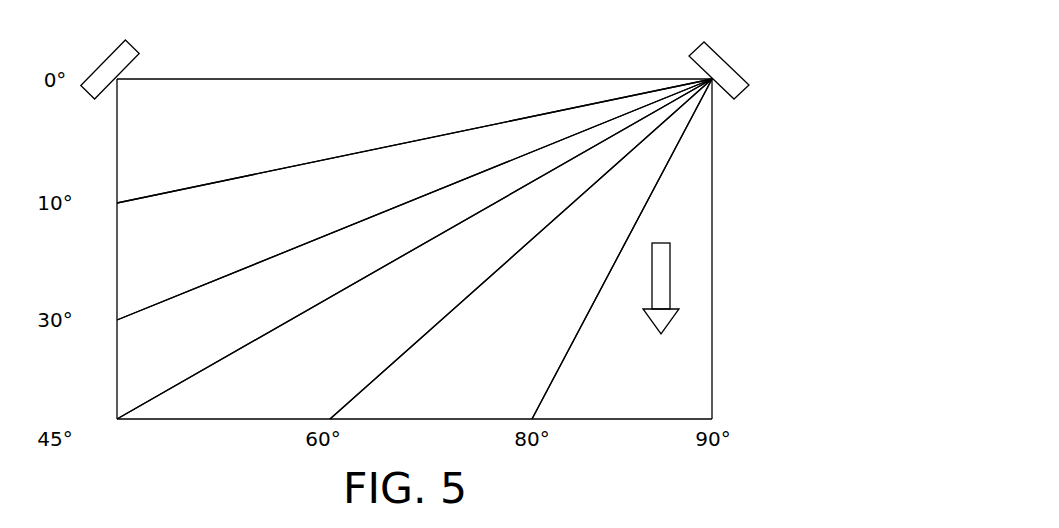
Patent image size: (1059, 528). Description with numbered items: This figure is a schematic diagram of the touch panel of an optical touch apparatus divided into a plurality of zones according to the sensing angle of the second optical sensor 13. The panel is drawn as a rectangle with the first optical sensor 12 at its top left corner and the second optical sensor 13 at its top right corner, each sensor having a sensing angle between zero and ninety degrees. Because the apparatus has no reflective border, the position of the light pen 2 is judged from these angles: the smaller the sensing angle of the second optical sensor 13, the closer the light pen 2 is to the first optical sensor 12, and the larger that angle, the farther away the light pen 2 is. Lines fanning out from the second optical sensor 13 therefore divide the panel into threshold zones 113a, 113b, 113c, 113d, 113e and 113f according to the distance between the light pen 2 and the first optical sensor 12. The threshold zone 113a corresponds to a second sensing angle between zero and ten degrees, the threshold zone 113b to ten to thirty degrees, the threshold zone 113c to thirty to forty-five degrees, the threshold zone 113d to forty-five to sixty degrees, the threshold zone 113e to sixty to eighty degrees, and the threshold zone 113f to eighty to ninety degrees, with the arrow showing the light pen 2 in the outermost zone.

The light pen 2 is at (660, 287).
The first optical sensor 12 is at (107, 73).
The second optical sensor 13 is at (723, 73).
The threshold zone 113a is at (237, 135).
The threshold zone 113b is at (254, 227).
The threshold zone 113c is at (269, 315).
The threshold zone 113d is at (366, 354).
The threshold zone 113e is at (511, 368).
The threshold zone 113f is at (668, 386).